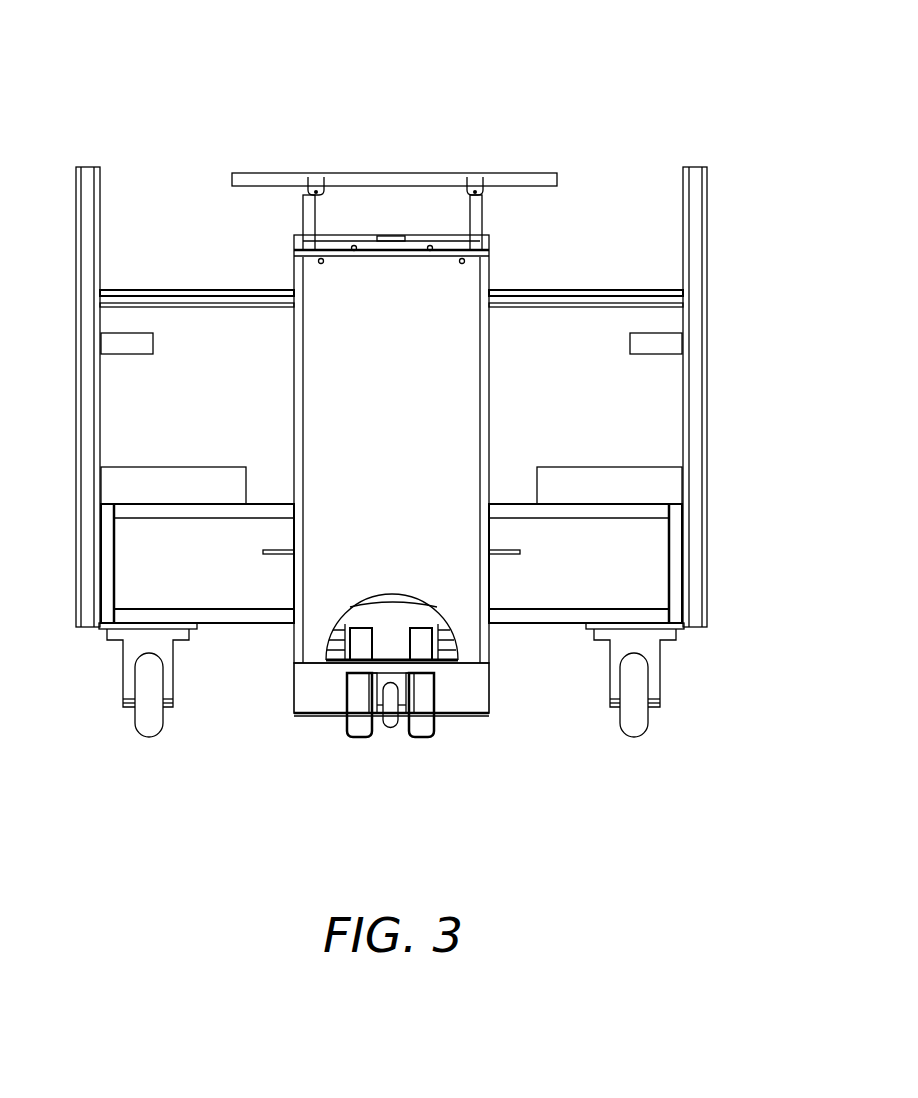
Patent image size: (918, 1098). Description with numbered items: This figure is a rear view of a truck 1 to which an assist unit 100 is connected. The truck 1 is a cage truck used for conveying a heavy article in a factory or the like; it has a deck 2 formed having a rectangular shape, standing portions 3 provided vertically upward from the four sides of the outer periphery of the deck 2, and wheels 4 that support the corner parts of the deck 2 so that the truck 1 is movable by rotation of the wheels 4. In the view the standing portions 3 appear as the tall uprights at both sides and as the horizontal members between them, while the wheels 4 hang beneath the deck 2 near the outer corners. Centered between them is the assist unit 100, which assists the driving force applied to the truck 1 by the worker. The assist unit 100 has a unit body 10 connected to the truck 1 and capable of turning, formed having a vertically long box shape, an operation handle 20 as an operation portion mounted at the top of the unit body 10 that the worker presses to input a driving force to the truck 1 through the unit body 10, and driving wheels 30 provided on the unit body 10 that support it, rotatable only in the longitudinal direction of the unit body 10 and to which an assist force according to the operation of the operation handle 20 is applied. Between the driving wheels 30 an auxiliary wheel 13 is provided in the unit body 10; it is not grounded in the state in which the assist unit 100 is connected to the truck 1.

The truck 1 is at (736, 102).
The deck 2 is at (209, 467).
The standing portions 3 is at (91, 167).
The wheels 4 is at (146, 716).
The unit body 10 is at (382, 310).
The auxiliary wheel 13 is at (395, 727).
The operation handle 20 is at (290, 180).
The driving wheels 30 is at (358, 716).
The assist unit 100 is at (566, 158).